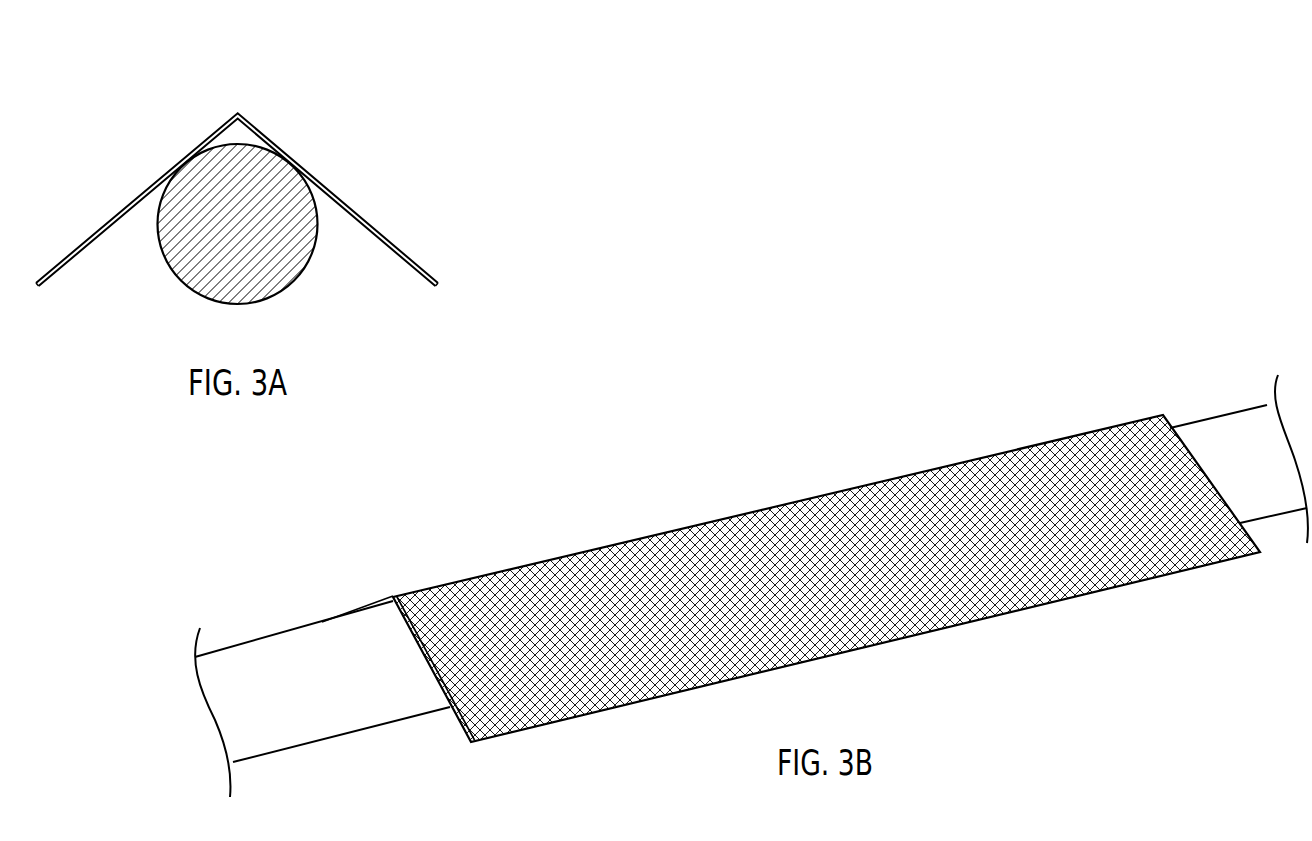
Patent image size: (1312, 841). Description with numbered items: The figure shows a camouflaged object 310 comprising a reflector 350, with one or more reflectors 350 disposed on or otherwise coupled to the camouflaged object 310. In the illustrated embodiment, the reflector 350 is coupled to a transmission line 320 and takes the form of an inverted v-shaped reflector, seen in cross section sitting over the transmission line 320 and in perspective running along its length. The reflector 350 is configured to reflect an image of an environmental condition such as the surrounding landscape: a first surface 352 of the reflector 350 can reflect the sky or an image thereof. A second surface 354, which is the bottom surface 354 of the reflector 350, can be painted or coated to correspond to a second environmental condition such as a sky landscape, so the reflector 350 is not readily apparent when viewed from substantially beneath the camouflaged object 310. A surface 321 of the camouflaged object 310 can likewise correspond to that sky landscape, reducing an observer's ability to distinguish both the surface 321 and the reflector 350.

In FIG. 3A, the camouflaged object 310 is at (130, 117).
In FIG. 3B, the camouflaged object 310 is at (753, 452).
In FIG. 3A, the transmission line 320 is at (287, 250).
In FIG. 3B, the transmission line 320 is at (263, 688).
In FIG. 3A, the surface of the camouflaged object 321 is at (190, 283).
In FIG. 3A, the reflector 350 is at (404, 158).
In FIG. 3B, the reflector 350 is at (993, 503).
In FIG. 3A, the first surface of the reflector 352 is at (297, 157).
In FIG. 3B, the first surface of the reflector 352 is at (573, 608).
In FIG. 3A, the second surface of the reflector 354 is at (92, 250).